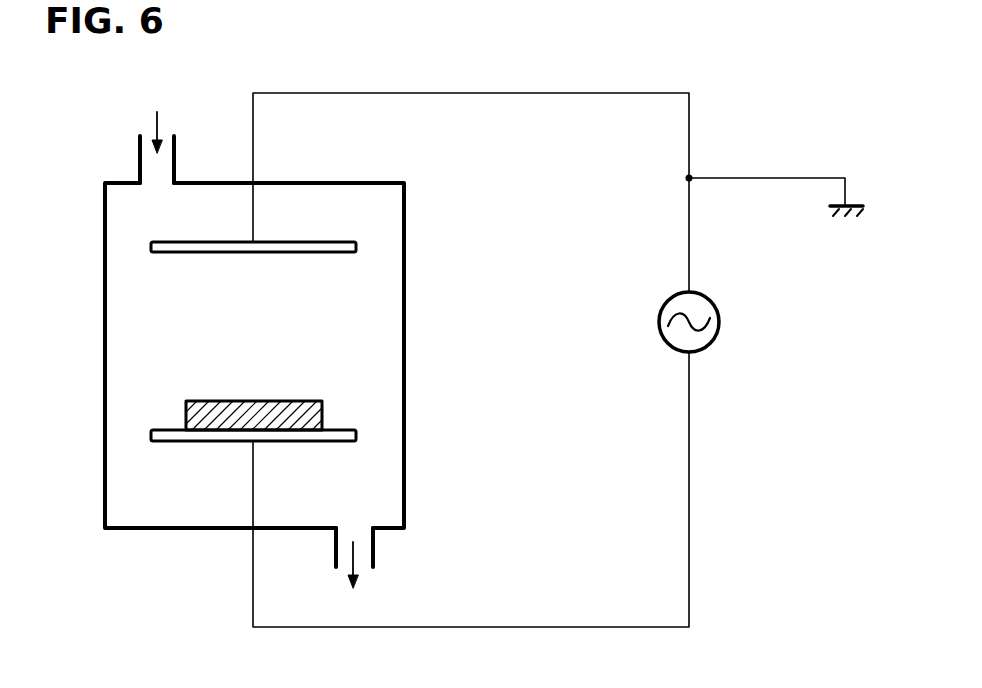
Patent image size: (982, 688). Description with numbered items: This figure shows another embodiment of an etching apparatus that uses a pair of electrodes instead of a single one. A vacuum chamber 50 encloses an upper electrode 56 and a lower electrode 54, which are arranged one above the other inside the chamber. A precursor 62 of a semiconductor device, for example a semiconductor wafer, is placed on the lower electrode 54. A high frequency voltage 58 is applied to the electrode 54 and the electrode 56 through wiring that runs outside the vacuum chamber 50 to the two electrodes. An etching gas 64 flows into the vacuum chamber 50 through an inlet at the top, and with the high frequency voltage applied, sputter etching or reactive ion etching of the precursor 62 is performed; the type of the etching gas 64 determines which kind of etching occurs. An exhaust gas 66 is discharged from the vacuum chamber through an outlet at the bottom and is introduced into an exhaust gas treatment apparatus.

The vacuum chamber 50 is at (389, 341).
The electrode 54 is at (356, 436).
The electrode 56 is at (356, 247).
The high frequency voltage 58 is at (712, 306).
The precursor of a semiconductor device 62 is at (322, 410).
The etching gas 64 is at (157, 122).
The exhaust gas 66 is at (353, 553).